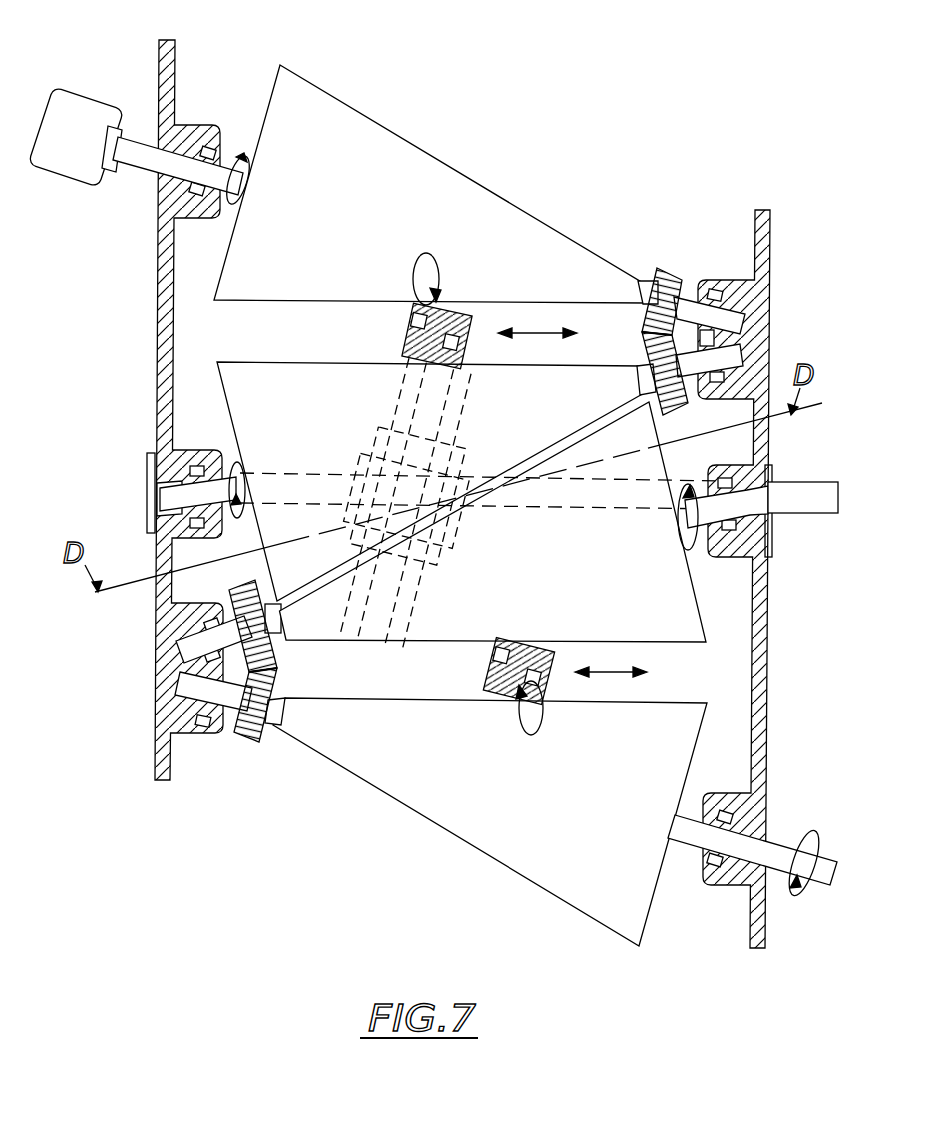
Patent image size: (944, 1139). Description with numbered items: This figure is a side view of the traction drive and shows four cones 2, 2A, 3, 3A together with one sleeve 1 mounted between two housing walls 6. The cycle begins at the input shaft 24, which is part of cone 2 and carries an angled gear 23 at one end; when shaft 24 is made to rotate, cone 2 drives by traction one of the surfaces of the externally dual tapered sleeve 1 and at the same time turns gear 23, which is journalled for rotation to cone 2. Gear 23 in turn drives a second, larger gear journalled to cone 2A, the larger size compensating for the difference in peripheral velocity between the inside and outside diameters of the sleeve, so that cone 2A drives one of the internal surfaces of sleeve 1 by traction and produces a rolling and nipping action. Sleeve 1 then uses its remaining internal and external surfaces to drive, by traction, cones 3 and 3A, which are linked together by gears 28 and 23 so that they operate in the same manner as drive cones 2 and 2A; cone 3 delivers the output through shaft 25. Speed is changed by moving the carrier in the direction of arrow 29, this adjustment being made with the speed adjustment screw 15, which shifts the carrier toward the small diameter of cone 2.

The sleeve 1 is at (410, 350).
The cone 2 is at (300, 95).
The cone 2A is at (237, 384).
The cone 3 is at (663, 740).
The cone 3A is at (662, 583).
The housing wall 6 is at (160, 68).
The speed adjustment screw 15 is at (822, 513).
The angled gear 23 is at (670, 268).
The input shaft 24 is at (78, 88).
The shaft 25 is at (828, 890).
The gear 28 is at (647, 348).
The arrow 29 is at (545, 333).